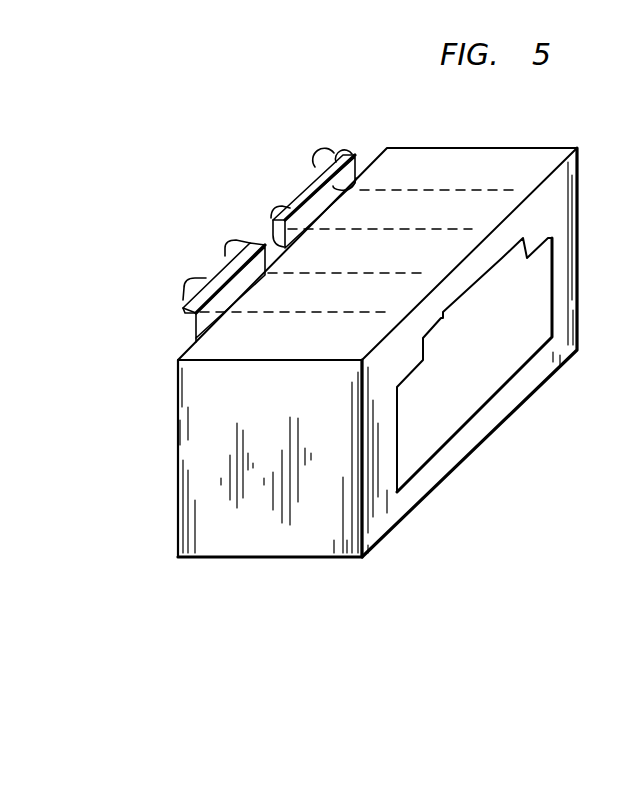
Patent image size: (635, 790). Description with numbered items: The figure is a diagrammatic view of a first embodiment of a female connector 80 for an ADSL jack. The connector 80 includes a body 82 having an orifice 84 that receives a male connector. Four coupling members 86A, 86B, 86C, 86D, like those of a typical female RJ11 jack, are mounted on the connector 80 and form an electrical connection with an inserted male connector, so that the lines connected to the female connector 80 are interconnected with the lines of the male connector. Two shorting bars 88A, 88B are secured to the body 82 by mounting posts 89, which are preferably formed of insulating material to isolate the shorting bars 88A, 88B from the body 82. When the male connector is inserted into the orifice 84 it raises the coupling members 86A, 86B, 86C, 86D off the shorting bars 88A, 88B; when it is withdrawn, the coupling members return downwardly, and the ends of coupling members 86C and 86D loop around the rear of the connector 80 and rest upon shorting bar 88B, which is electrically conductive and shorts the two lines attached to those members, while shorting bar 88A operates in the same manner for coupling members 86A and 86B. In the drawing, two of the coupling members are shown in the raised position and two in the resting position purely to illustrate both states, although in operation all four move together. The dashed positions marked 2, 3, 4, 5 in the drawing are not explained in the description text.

The female connector 80 is at (148, 173).
The body 82 is at (337, 530).
The orifice 84 is at (478, 383).
The coupling member 86A is at (184, 290).
The coupling member 86B is at (224, 250).
The coupling member 86C is at (270, 213).
The coupling member 86D is at (316, 158).
The shorting bar 88A is at (184, 312).
The shorting bar 88B is at (348, 153).
The mounting post 89 is at (358, 162).
The position marker 2 is at (301, 309).
The position marker 3 is at (355, 271).
The position marker 4 is at (388, 225).
The position marker 5 is at (445, 186).